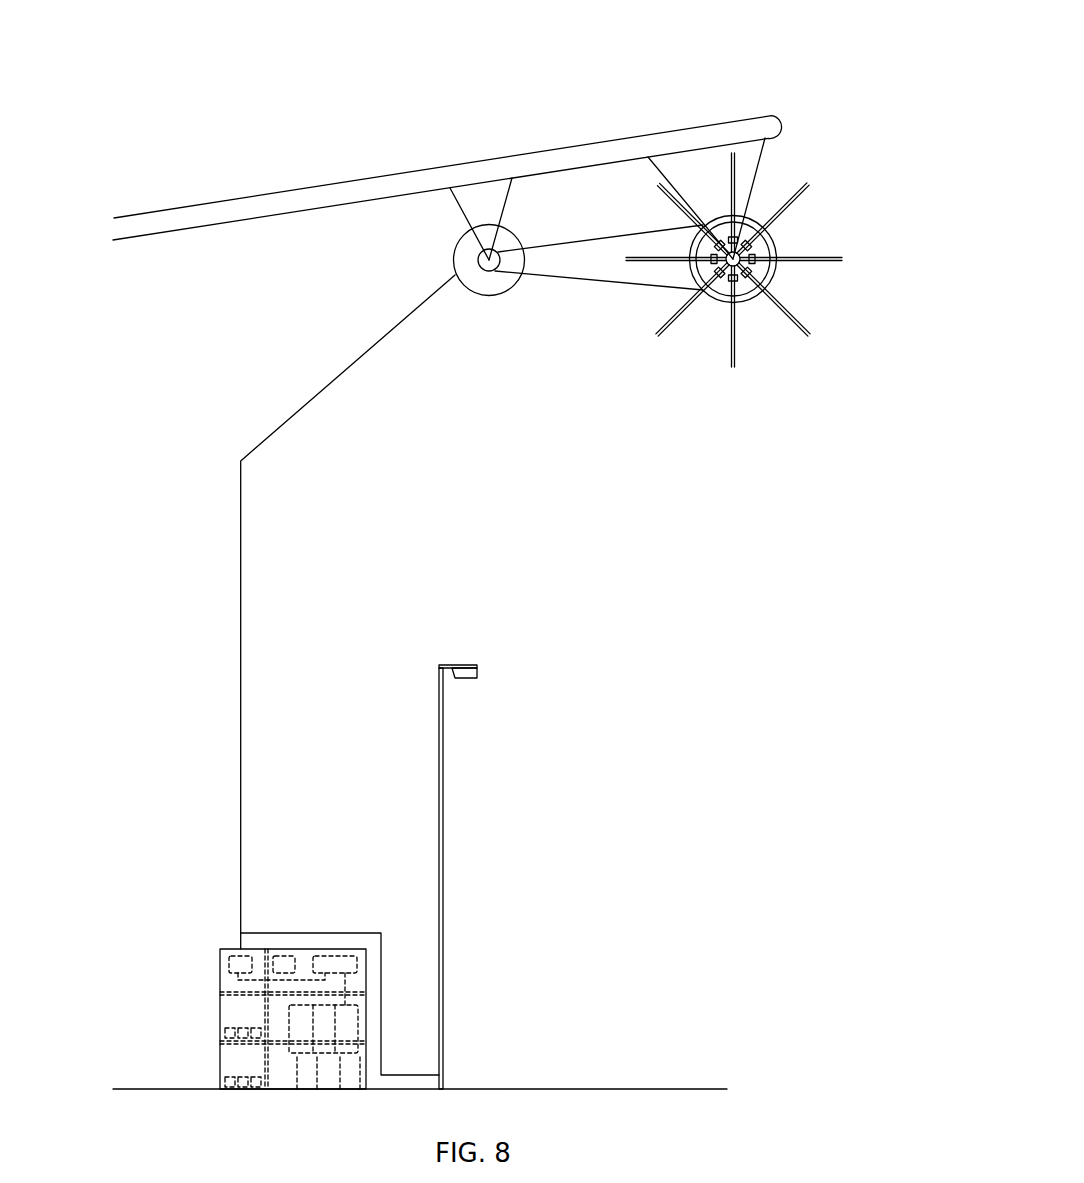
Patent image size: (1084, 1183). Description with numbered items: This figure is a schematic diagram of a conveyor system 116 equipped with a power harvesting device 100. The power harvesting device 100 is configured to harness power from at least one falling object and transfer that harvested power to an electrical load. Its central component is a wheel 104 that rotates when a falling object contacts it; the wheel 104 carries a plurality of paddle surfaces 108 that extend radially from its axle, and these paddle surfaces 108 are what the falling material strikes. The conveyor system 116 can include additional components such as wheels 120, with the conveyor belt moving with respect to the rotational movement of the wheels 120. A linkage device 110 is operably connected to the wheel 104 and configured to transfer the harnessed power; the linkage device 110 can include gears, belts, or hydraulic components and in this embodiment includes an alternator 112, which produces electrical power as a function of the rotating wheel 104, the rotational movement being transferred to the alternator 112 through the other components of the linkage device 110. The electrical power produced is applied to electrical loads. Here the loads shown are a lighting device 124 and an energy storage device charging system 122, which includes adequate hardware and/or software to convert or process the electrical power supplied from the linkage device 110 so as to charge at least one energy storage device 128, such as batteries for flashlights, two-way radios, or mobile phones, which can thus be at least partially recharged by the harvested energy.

The power harvesting device 100 is at (667, 53).
The wheel 104 is at (780, 232).
The paddle surface 108 is at (667, 260).
The linkage device 110 is at (560, 281).
The alternator 112 is at (487, 296).
The conveyor system 116 is at (498, 157).
The wheels 120 is at (738, 118).
The energy storage device charging system 122 is at (220, 1017).
The lighting device 124 is at (443, 742).
The energy storage device 128 is at (280, 951).